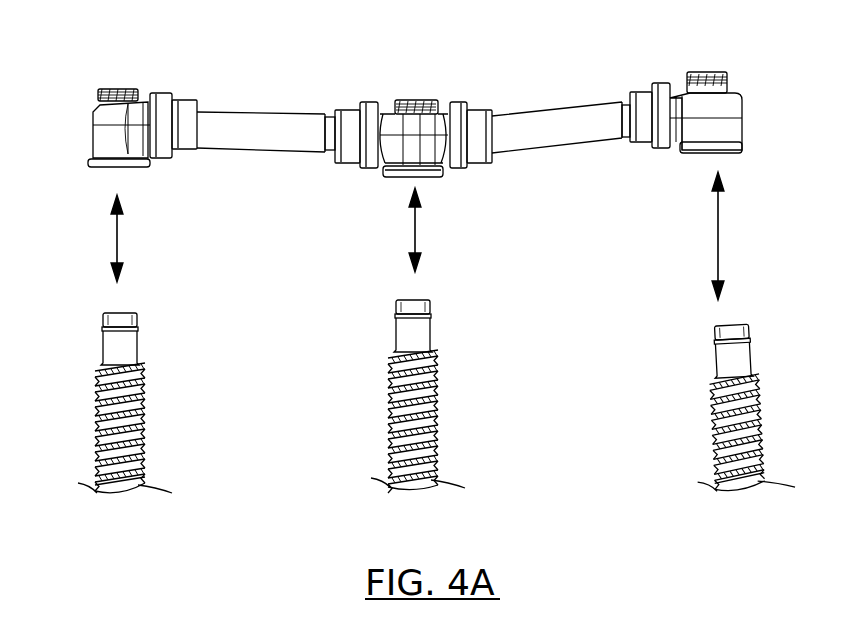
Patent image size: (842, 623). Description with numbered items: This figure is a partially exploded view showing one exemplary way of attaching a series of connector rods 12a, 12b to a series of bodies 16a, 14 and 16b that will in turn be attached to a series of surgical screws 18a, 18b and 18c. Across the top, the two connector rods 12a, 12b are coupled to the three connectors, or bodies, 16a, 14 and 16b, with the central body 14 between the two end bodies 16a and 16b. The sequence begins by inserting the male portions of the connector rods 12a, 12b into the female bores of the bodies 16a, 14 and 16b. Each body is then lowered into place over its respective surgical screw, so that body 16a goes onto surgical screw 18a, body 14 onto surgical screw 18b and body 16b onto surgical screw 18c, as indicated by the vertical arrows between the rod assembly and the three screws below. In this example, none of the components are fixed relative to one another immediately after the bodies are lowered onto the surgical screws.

The connector rod 12a is at (238, 112).
The connector rod 12b is at (545, 110).
The body 14 is at (441, 112).
The body 16a is at (97, 108).
The body 16b is at (737, 93).
The surgical screw 18a is at (98, 424).
The surgical screw 18b is at (392, 413).
The surgical screw 18c is at (717, 433).